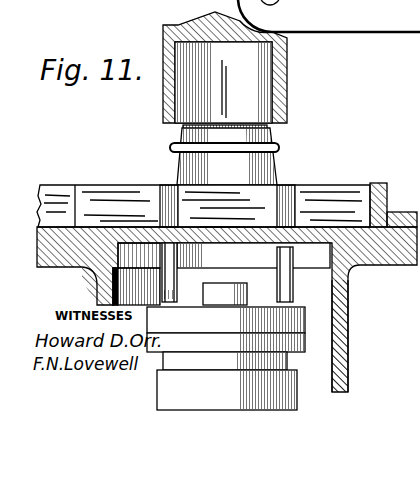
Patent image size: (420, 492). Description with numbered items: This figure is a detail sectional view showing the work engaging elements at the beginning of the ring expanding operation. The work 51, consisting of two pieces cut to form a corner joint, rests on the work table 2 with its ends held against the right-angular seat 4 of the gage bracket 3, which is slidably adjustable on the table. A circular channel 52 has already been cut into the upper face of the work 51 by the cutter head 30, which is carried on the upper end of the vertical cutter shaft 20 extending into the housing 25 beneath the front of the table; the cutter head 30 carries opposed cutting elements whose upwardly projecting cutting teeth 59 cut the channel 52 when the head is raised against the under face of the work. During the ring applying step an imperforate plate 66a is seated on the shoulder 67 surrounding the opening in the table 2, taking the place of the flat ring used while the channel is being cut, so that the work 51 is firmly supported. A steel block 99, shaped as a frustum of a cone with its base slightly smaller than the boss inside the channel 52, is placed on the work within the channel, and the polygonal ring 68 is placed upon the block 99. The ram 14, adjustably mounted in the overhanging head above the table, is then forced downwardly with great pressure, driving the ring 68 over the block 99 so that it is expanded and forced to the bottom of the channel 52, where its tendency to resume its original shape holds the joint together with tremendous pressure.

The ram 14 is at (283, 80).
The ring 68 is at (283, 146).
The steel block 99 is at (274, 163).
The circular channel 52 is at (170, 187).
The work 51 is at (340, 195).
The right-angular seat 4 is at (383, 190).
The gage bracket 3 is at (407, 220).
The imperforate plate 66a is at (224, 238).
The shoulder 67 is at (88, 269).
The work table 2 is at (393, 254).
The housing 25 is at (348, 370).
The cutting teeth 59 is at (170, 281).
The cutter shaft 20 is at (240, 285).
The cutter head 30 is at (307, 340).